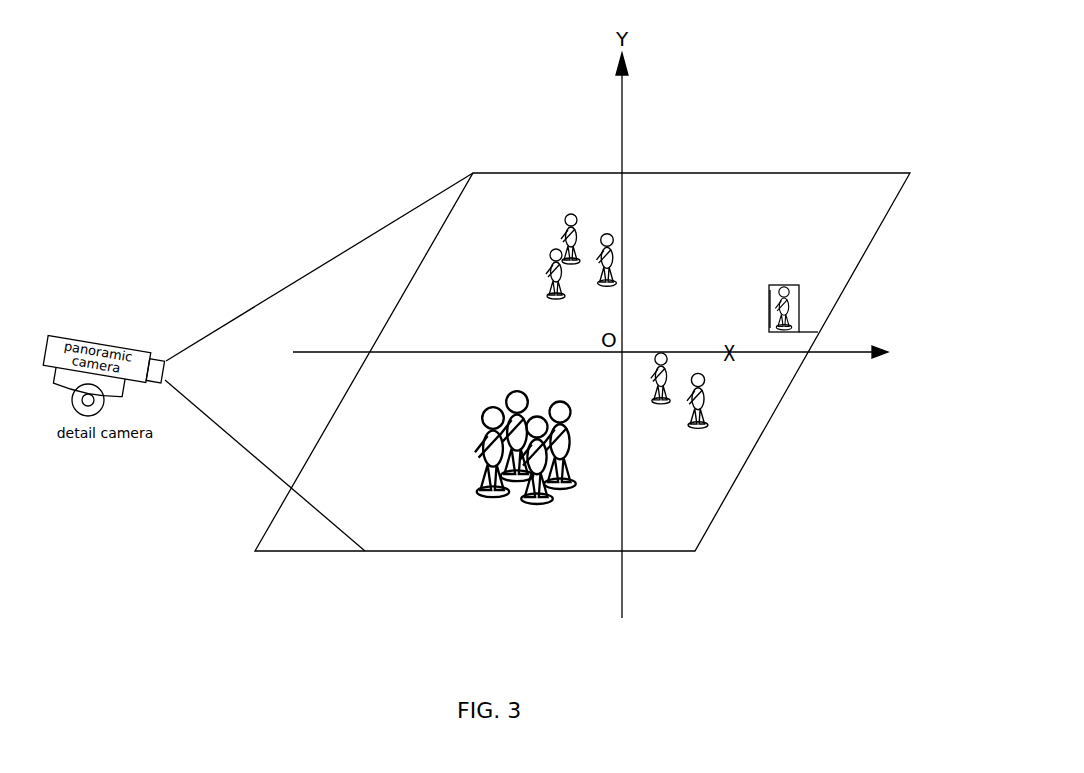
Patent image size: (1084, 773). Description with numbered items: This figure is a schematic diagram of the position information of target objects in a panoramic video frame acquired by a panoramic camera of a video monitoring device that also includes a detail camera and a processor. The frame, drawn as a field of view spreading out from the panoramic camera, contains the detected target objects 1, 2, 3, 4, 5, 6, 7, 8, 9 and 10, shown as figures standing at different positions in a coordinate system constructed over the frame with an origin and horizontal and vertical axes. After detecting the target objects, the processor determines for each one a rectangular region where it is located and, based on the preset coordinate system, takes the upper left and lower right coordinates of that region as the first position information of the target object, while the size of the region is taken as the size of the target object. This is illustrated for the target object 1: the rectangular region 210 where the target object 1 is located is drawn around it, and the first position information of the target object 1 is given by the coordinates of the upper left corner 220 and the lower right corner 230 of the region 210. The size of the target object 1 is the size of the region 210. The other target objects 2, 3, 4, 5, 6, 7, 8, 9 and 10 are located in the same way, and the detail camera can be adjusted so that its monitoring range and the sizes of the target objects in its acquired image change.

The target object 1 is at (787, 300).
The target object 2 is at (547, 273).
The target object 3 is at (570, 230).
The target object 4 is at (607, 251).
The target object 5 is at (654, 378).
The target object 6 is at (702, 396).
The target object 7 is at (491, 452).
The target object 8 is at (516, 428).
The target object 9 is at (536, 453).
The target object 10 is at (563, 438).
The rectangular region 210 is at (754, 309).
The upper left corner 220 is at (769, 285).
The lower right corner 230 is at (822, 332).